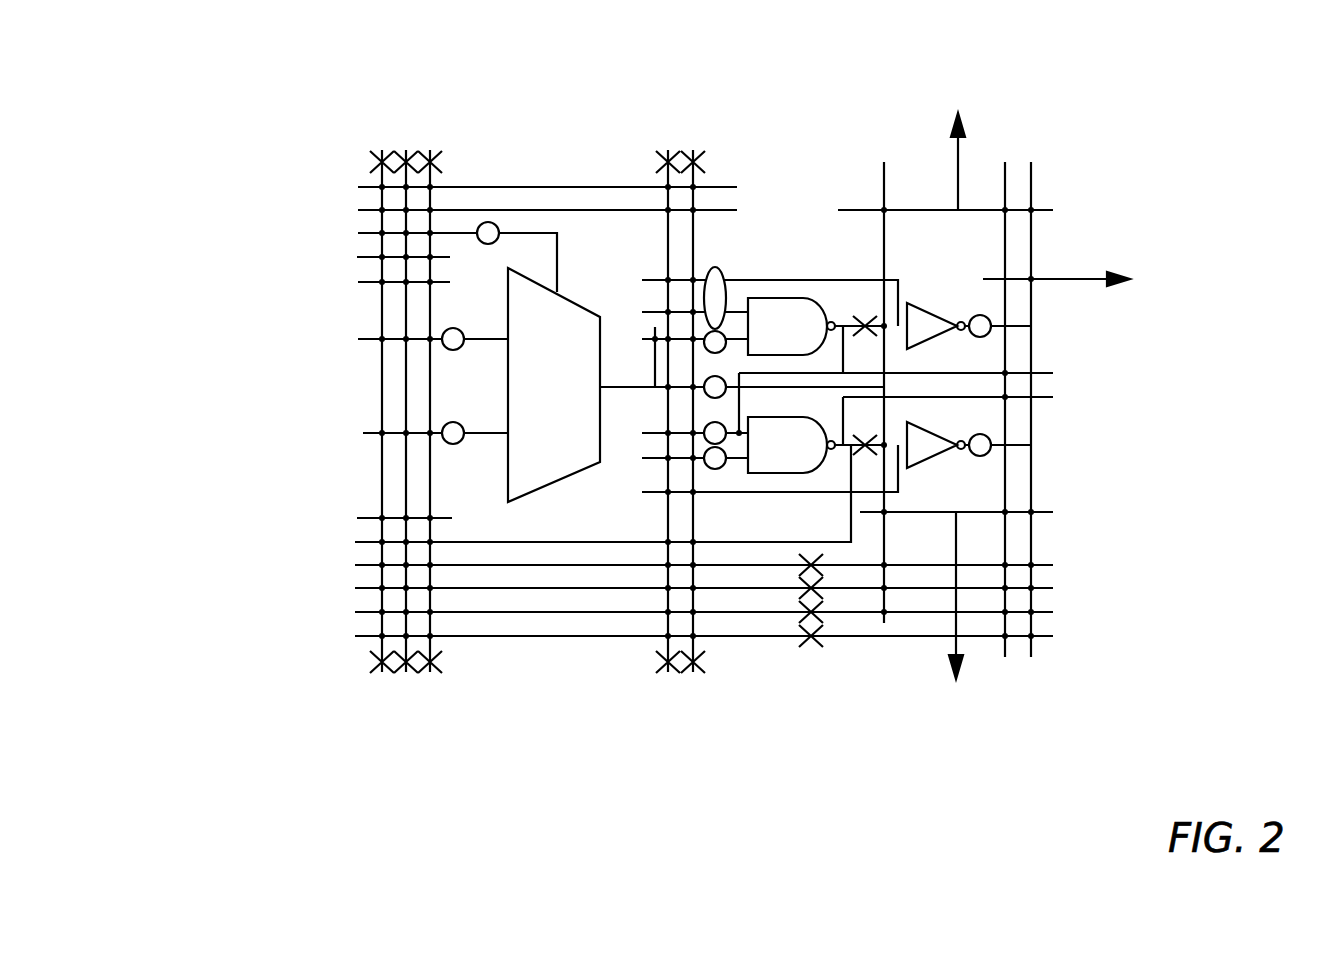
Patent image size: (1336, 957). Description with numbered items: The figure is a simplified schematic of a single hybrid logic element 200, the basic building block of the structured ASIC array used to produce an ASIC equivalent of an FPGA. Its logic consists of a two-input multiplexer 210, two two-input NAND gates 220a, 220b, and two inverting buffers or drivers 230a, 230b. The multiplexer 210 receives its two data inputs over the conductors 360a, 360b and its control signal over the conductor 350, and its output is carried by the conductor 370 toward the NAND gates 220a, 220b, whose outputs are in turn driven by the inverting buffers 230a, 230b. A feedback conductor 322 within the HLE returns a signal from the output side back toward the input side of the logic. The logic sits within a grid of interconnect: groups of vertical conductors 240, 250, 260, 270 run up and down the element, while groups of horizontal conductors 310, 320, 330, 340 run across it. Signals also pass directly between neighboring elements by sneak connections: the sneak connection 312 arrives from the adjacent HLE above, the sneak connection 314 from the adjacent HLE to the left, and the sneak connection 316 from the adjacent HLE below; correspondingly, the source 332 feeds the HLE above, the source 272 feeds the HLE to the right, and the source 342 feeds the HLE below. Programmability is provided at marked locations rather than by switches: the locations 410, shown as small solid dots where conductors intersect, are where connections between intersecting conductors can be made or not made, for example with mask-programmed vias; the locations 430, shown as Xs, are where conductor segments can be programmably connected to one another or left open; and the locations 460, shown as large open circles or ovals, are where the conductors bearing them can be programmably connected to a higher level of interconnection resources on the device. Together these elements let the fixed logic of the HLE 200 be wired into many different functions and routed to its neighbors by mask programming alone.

The hybrid logic element 200 is at (383, 32).
The two-input multiplexer 210 is at (565, 295).
The two-input NAND gate 220a is at (810, 304).
The two-input NAND gate 220b is at (762, 474).
The inverting buffer 230a is at (942, 320).
The inverting buffer 230b is at (930, 458).
The vertical conductors 240 is at (442, 687).
The vertical conductors 250 is at (715, 688).
The vertical conductors 260 is at (925, 155).
The vertical conductors 270 is at (1060, 722).
The source of input to right HLE 272 is at (1077, 283).
The horizontal conductors 310 is at (290, 185).
The sneak connection from HLE above 312 is at (372, 256).
The sneak connection from HLE to the left 314 is at (370, 284).
The sneak connection from HLE below 316 is at (363, 521).
The horizontal conductors 320 is at (347, 570).
The feedback conductor 322 is at (600, 541).
The horizontal conductors 330 is at (1060, 187).
The source of input to HLE above 332 is at (960, 150).
The horizontal conductors 340 is at (1058, 490).
The source of input to HLE below 342 is at (953, 645).
The conductor 350 is at (531, 233).
The conductor 360a is at (363, 340).
The conductor 360b is at (363, 433).
The conductor 370 is at (622, 388).
The programmable connection locations 410 is at (437, 186).
The programmable segment connection locations 430 is at (370, 654).
The higher-level interconnect connection locations 460 is at (453, 328).